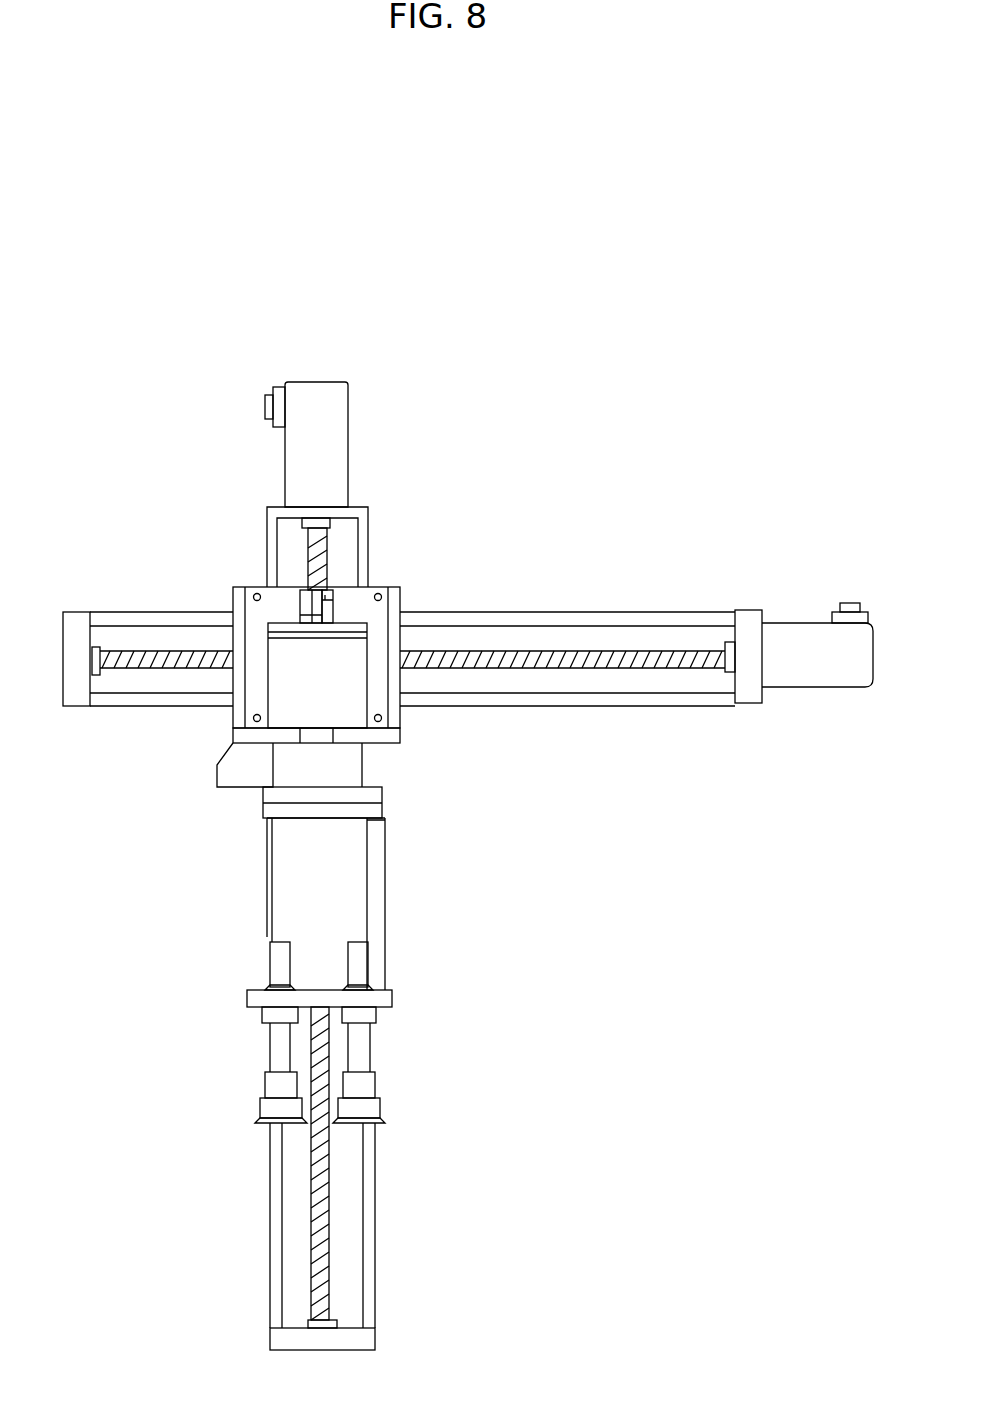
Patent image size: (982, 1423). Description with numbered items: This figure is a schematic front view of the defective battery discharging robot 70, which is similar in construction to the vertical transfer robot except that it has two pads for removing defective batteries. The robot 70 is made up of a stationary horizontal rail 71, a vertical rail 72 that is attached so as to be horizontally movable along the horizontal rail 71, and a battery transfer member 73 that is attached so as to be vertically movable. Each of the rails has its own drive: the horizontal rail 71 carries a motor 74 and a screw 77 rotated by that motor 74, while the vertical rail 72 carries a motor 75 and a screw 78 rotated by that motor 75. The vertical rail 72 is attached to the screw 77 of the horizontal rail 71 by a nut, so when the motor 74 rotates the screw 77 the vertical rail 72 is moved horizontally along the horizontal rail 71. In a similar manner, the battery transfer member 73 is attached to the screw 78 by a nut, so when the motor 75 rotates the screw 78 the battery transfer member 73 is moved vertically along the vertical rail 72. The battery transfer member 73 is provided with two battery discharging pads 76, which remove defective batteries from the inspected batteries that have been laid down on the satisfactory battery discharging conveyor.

The defective battery discharging robot 70 is at (512, 412).
The horizontal rail 71 is at (598, 702).
The vertical rail 72 is at (370, 1220).
The battery transfer member 73 is at (377, 890).
The motor 74 is at (810, 682).
The motor 75 is at (348, 441).
The battery discharging pads 76 is at (290, 1108).
The screw 77 is at (512, 651).
The screw 78 is at (310, 1207).